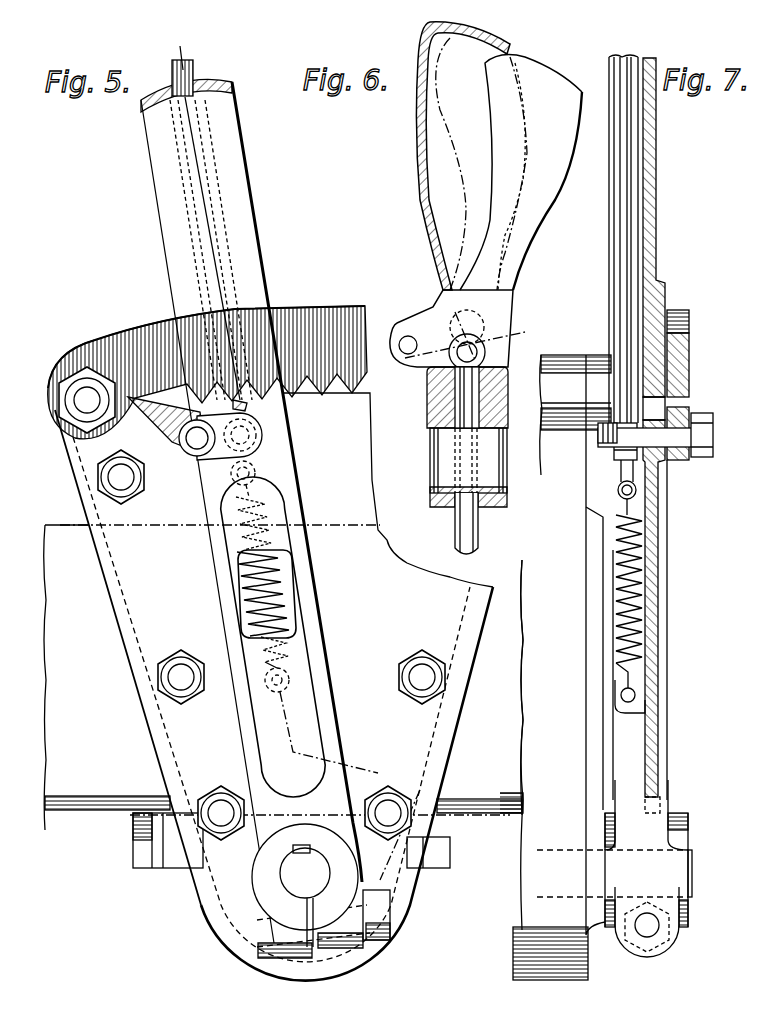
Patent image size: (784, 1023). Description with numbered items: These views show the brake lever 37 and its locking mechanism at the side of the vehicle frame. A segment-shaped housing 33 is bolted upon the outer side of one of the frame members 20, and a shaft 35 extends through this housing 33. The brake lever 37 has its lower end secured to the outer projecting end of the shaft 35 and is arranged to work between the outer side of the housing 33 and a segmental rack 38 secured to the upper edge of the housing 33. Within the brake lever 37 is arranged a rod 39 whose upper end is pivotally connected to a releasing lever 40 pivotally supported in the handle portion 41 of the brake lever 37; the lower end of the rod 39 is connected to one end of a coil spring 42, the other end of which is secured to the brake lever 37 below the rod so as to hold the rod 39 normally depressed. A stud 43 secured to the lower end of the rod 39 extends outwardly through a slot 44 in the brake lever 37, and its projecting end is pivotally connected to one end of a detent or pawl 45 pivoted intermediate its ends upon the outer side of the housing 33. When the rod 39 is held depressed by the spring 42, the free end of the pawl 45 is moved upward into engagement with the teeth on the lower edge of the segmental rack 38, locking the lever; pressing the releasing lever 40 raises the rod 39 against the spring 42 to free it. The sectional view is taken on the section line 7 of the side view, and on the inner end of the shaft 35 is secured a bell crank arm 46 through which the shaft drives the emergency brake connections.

In FIG. 5, the section line 7— 7 is at (284, 415).
In FIG. 5, the frame member 20 is at (283, 696).
In FIG. 5, the segment-shaped housing 33 is at (228, 965).
In FIG. 7, the segment-shaped housing 33 is at (558, 988).
In FIG. 5, the shaft 35 is at (305, 885).
In FIG. 7, the shaft 35 is at (693, 875).
In FIG. 5, the brake lever 37 is at (258, 262).
In FIG. 6, the brake lever 37 is at (429, 456).
In FIG. 7, the brake lever 37 is at (658, 200).
In FIG. 5, the segmental rack 38 is at (207, 372).
In FIG. 7, the segmental rack 38 is at (690, 352).
In FIG. 5, the rod 39 is at (195, 67).
In FIG. 6, the rod 39 is at (480, 532).
In FIG. 7, the rod 39 is at (621, 277).
In FIG. 6, the releasing lever 40 is at (555, 146).
In FIG. 6, the handle portion 41 is at (416, 166).
In FIG. 5, the coil spring 42 is at (283, 572).
In FIG. 7, the coil spring 42 is at (637, 592).
In FIG. 5, the stud 43 is at (256, 437).
In FIG. 7, the stud 43 is at (652, 440).
In FIG. 5, the slot 44 is at (256, 405).
In FIG. 7, the slot 44 is at (692, 390).
In FIG. 5, the detent or pawl 45 is at (142, 456).
In FIG. 7, the bell crank arm 46 is at (700, 417).